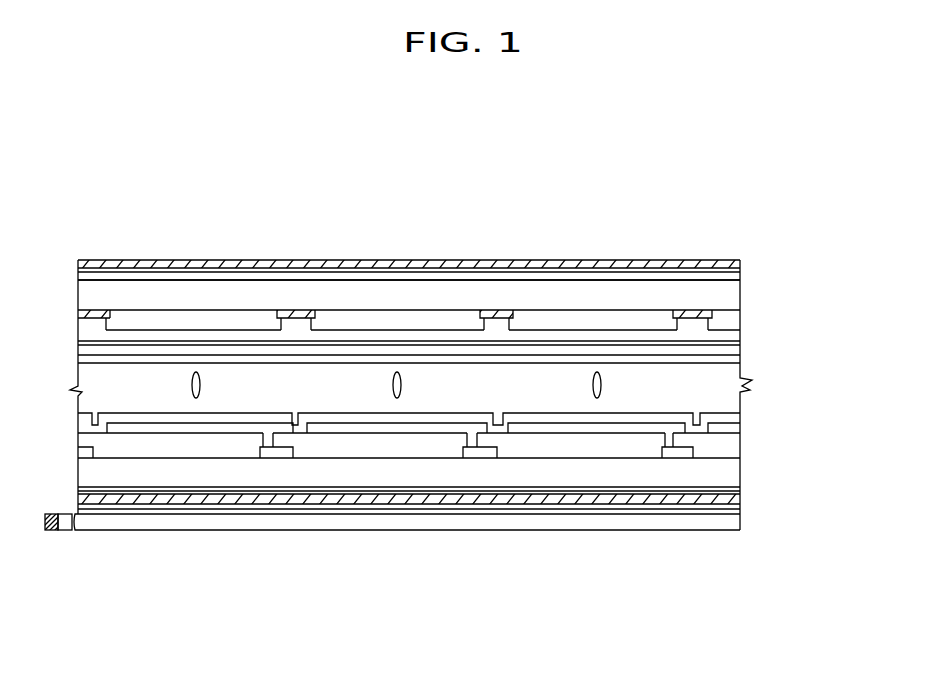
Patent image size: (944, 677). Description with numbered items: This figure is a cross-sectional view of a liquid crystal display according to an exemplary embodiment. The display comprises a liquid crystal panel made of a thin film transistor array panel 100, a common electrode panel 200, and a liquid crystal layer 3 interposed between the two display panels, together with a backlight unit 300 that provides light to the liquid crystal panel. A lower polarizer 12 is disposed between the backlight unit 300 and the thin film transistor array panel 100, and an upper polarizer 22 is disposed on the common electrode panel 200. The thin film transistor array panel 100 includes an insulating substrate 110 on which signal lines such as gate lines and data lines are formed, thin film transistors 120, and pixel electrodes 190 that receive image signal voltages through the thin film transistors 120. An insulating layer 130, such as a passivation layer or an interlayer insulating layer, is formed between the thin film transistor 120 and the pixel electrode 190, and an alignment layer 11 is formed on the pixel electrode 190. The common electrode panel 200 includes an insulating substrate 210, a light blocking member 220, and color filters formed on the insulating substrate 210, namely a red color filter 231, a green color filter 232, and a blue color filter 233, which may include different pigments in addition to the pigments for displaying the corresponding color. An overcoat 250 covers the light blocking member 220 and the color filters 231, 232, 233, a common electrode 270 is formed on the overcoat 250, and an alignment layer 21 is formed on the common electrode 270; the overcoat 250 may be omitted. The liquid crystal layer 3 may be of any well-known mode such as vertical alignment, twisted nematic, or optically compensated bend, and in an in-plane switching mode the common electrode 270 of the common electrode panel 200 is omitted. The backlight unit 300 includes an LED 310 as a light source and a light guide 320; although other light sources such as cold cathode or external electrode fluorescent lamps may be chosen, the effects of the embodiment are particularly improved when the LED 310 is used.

The upper polarizer 22 is at (634, 263).
The insulating substrate 210 is at (725, 288).
The light blocking member 220 is at (694, 310).
The red color filter 231 is at (234, 322).
The green color filter 232 is at (354, 322).
The blue color filter 233 is at (568, 318).
The overcoat 250 is at (450, 337).
The common electrode 270 is at (733, 345).
The alignment layer 21 is at (696, 357).
The liquid crystal layer 3 is at (828, 360).
The alignment layer 11 is at (650, 413).
The pixel electrode 190 is at (596, 425).
The insulating layer 130 is at (530, 445).
The thin film transistor 120 is at (680, 455).
The insulating substrate 110 is at (735, 468).
The lower polarizer 12 is at (735, 498).
The backlight unit 300 is at (385, 569).
The LED 310 is at (55, 546).
The light guide 320 is at (252, 523).
The common electrode panel 200 is at (828, 265).
The thin film transistor array panel 100 is at (828, 412).